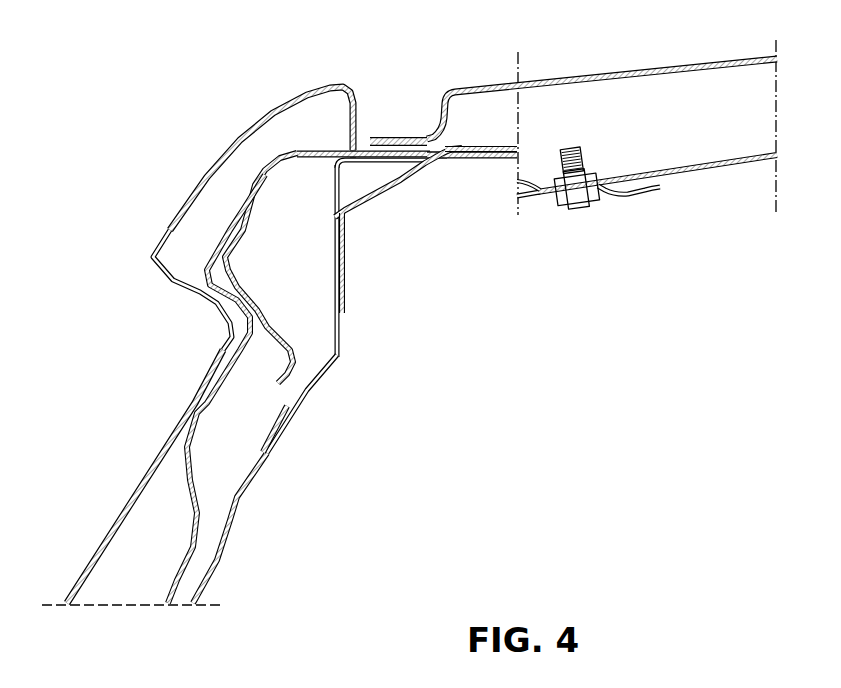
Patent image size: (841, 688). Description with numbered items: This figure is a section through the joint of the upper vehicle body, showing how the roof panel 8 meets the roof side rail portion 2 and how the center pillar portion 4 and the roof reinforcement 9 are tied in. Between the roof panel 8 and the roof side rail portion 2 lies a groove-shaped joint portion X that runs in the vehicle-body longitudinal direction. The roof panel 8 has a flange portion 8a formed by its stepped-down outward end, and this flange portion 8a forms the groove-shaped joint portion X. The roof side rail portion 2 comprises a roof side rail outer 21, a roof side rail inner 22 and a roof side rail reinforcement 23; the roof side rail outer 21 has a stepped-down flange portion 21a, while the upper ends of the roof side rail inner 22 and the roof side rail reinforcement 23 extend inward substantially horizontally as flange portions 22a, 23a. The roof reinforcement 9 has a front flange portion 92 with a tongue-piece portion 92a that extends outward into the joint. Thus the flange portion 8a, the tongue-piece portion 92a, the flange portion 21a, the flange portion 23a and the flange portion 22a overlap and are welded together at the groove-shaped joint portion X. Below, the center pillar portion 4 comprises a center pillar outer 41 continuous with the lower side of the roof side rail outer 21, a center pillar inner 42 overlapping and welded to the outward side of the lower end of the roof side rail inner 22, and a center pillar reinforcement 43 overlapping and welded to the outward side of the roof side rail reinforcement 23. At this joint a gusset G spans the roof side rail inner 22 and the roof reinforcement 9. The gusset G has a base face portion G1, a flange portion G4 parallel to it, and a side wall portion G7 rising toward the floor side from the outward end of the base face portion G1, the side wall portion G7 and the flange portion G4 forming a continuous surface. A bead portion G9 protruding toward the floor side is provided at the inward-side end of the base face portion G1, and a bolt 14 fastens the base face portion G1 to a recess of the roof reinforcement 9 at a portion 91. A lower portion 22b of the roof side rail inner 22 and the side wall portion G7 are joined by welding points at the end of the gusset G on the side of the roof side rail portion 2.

The roof side rail portion 2 is at (287, 242).
The roof side rail outer 21 is at (200, 186).
The flange portion 21a is at (373, 150).
The roof side rail inner 22 is at (290, 306).
The flange portion 22a is at (370, 162).
The lower portion 22b is at (335, 278).
The roof side rail reinforcement 23 is at (305, 367).
The flange portion 23a is at (406, 128).
The center pillar portion 4 is at (167, 389).
The center pillar outer 41 is at (157, 458).
The center pillar inner 42 is at (236, 521).
The center pillar reinforcement 43 is at (197, 558).
The roof panel 8 is at (573, 83).
The flange portion 8a is at (412, 135).
The roof reinforcement 9 is at (602, 121).
The roof reinforcement 91 is at (716, 168).
The front flange portion 92 is at (472, 87).
The tongue-piece portion 92a is at (432, 128).
The bolt 14 is at (575, 207).
The gusset G is at (508, 230).
The base face portion G1 is at (532, 196).
The flange portion G4 is at (485, 158).
The side wall portion G7 is at (345, 292).
The bead portion G9 is at (652, 193).
The groove-shaped joint portion X is at (397, 93).